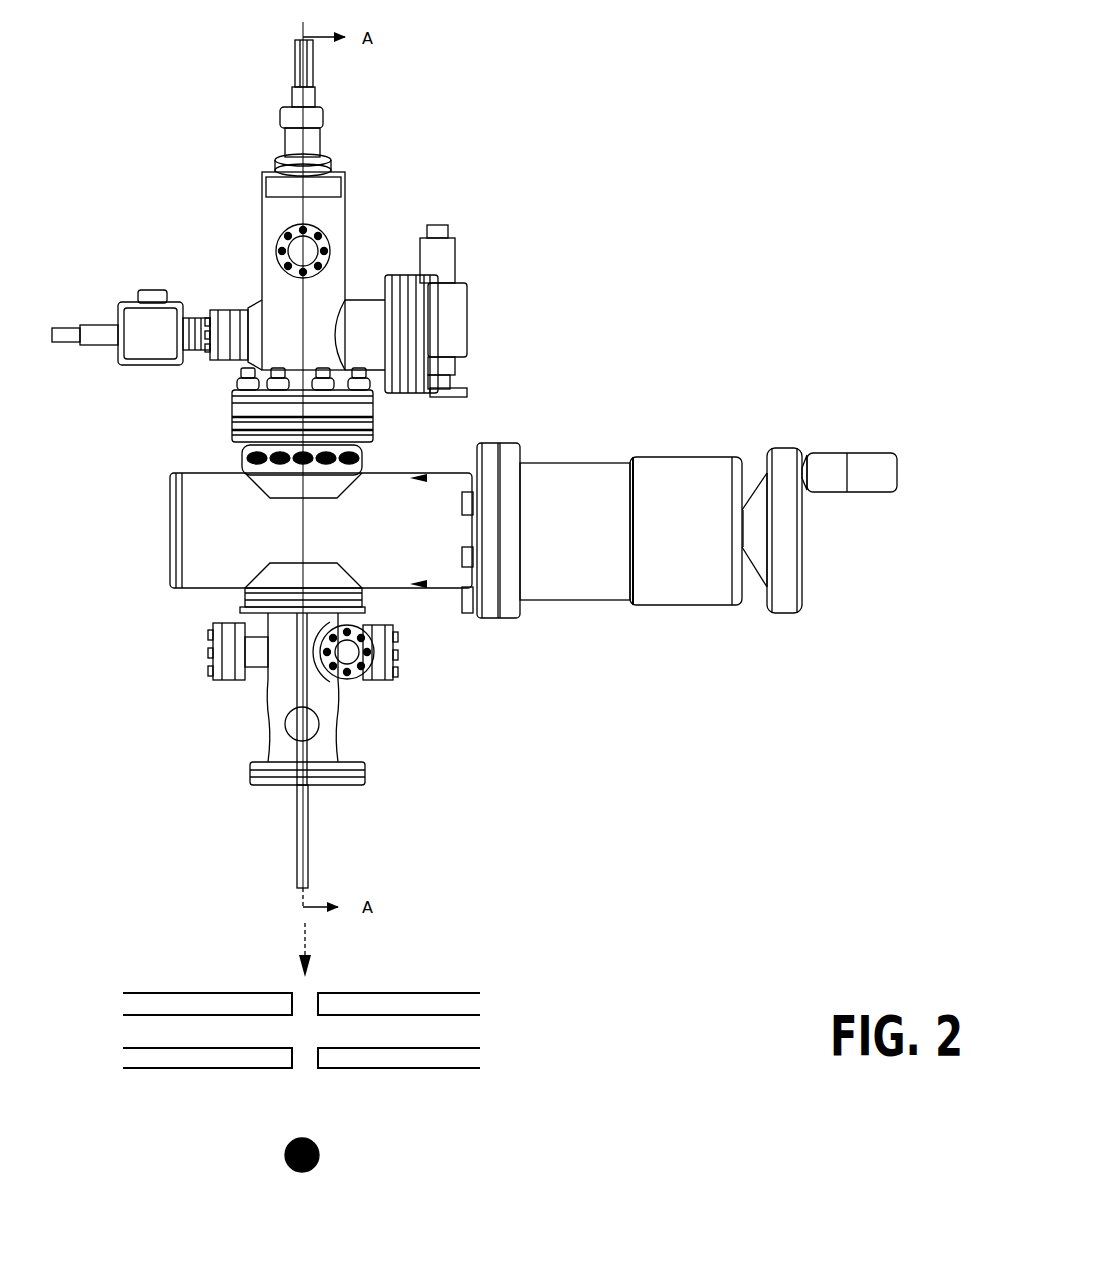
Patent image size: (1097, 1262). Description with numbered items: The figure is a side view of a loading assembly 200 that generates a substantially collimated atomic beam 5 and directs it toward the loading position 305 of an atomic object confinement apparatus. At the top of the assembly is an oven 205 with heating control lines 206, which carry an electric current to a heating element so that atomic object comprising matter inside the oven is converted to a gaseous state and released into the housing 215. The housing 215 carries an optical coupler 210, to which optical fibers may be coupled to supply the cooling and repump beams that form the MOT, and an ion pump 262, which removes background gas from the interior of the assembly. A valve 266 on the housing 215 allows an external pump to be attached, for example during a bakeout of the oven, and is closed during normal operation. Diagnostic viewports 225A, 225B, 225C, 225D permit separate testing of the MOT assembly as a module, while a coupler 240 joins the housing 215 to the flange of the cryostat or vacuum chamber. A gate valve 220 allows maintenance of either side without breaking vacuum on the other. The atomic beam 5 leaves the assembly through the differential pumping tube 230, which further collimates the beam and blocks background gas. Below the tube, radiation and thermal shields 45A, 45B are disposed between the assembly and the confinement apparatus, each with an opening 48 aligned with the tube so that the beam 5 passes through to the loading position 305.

The loading assembly 200 is at (806, 33).
The heating control lines 206 is at (245, 61).
The oven 205 is at (357, 131).
The housing 215 is at (354, 269).
The diagnostic viewport 225D is at (243, 240).
The optical coupler 210 is at (208, 311).
The ion pump 262 is at (125, 310).
The valve 266 is at (457, 311).
The coupler 240 is at (355, 421).
The gate valve 220 is at (533, 520).
The diagnostic viewport 225A is at (171, 664).
The diagnostic viewport 225B is at (448, 665).
The diagnostic viewport 225C is at (395, 686).
The differential pumping tube 230 is at (368, 836).
The substantially collimated atomic beam 5 is at (267, 920).
The opening 48 is at (256, 973).
The radiation and/or thermal shield 45A is at (361, 1023).
The radiation and/or thermal shield 45B is at (361, 1077).
The loading position 305 is at (243, 1134).